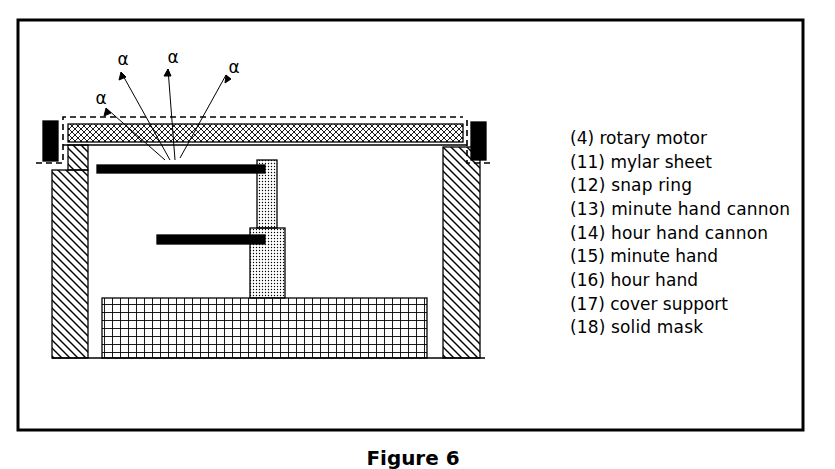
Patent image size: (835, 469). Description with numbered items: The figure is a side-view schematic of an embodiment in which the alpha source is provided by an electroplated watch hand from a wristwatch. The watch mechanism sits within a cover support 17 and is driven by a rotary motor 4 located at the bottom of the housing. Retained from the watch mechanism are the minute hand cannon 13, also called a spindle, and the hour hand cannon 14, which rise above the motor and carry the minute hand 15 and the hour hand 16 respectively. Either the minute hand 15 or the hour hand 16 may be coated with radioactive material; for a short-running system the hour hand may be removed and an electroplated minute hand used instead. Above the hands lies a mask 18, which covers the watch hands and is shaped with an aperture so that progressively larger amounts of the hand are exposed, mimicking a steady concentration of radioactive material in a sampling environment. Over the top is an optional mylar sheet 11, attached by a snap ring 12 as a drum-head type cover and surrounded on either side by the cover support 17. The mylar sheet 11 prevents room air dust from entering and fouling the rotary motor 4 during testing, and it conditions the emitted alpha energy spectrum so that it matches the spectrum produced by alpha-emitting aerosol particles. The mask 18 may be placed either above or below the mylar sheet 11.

The rotary motor 4 is at (412, 355).
The mylar sheet 11 is at (489, 165).
The snap ring 12 is at (487, 128).
The minute hand cannon 13 is at (278, 193).
The hour hand cannon 14 is at (287, 268).
The minute hand 15 is at (147, 174).
The hour hand 16 is at (218, 245).
The cover support 17 is at (480, 263).
The mask 18 is at (284, 132).